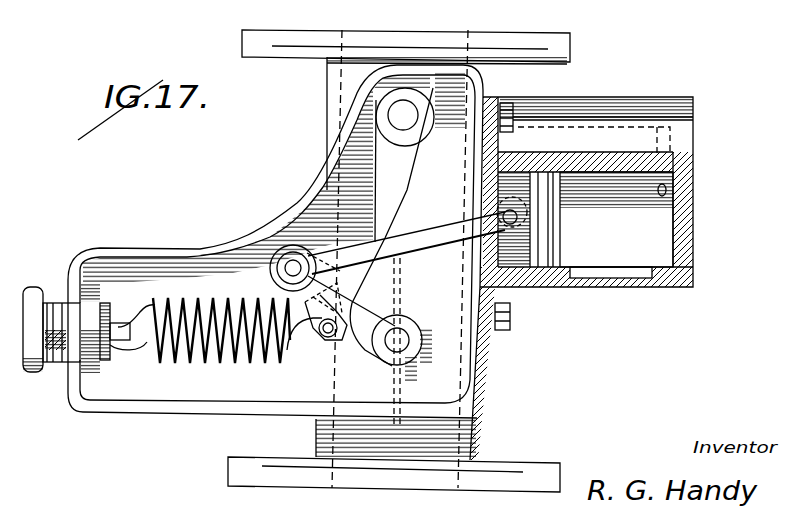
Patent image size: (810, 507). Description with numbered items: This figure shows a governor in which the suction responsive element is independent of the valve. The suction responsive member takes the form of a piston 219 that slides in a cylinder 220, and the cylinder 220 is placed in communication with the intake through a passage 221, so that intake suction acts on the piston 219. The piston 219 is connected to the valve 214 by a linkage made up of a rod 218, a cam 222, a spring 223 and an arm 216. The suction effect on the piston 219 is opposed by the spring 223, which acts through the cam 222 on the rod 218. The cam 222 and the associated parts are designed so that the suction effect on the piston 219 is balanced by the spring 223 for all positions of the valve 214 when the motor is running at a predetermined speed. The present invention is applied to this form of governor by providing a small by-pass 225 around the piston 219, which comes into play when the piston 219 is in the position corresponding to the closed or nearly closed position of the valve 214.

The valve 214 is at (398, 305).
The arm 216 is at (362, 328).
The rod 218 is at (443, 218).
The piston 219 is at (518, 268).
The cylinder 220 is at (665, 224).
The passage 221 is at (670, 135).
The cam 222 is at (393, 191).
The spring 223 is at (215, 362).
The by-pass 225 is at (622, 273).